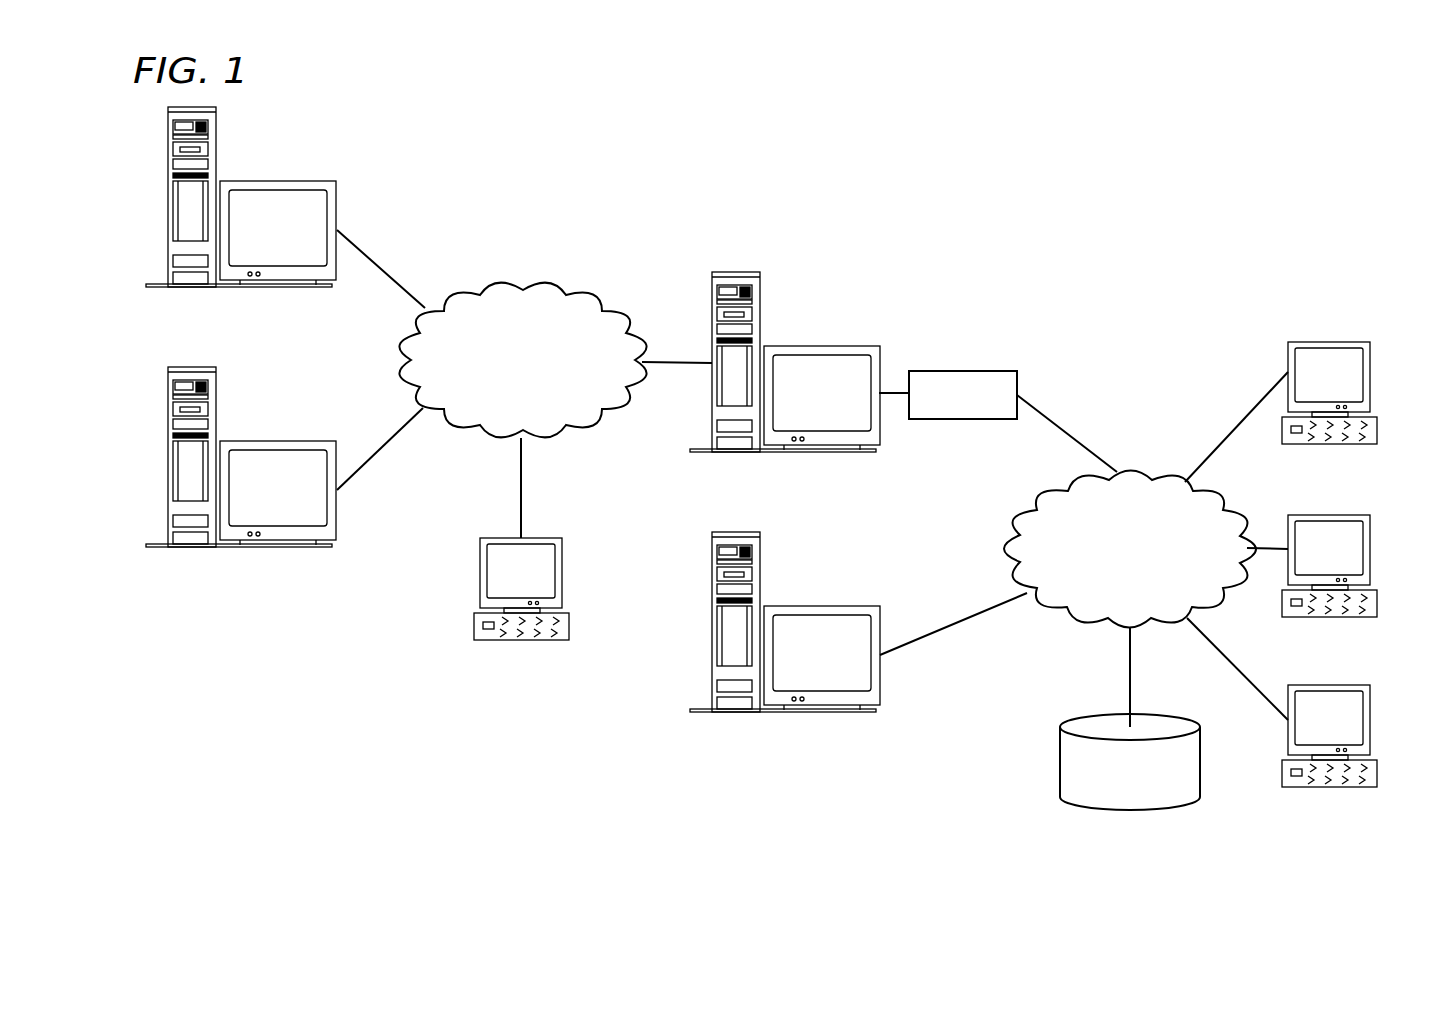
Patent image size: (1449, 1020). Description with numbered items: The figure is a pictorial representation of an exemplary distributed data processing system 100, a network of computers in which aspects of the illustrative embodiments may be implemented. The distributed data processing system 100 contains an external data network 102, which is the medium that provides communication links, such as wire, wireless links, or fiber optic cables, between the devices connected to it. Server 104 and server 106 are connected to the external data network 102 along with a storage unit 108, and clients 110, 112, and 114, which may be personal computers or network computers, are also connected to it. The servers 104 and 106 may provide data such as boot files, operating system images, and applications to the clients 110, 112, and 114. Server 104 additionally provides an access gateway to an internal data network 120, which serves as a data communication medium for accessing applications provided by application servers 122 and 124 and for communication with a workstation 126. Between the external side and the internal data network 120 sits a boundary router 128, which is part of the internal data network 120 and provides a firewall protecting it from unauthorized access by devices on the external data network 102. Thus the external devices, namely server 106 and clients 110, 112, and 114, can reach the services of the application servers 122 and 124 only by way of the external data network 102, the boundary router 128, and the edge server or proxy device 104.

The distributed data processing system 100 is at (915, 210).
The external data network 102 is at (1013, 547).
The server 104 is at (733, 272).
The server 106 is at (712, 623).
The storage unit 108 is at (1150, 810).
The client 110 is at (1370, 375).
The client 112 is at (1370, 560).
The client 114 is at (1370, 720).
The internal data network 120 is at (497, 288).
The application server 122 is at (168, 198).
The application server 124 is at (168, 493).
The workstation 126 is at (480, 573).
The boundary router 128 is at (968, 371).